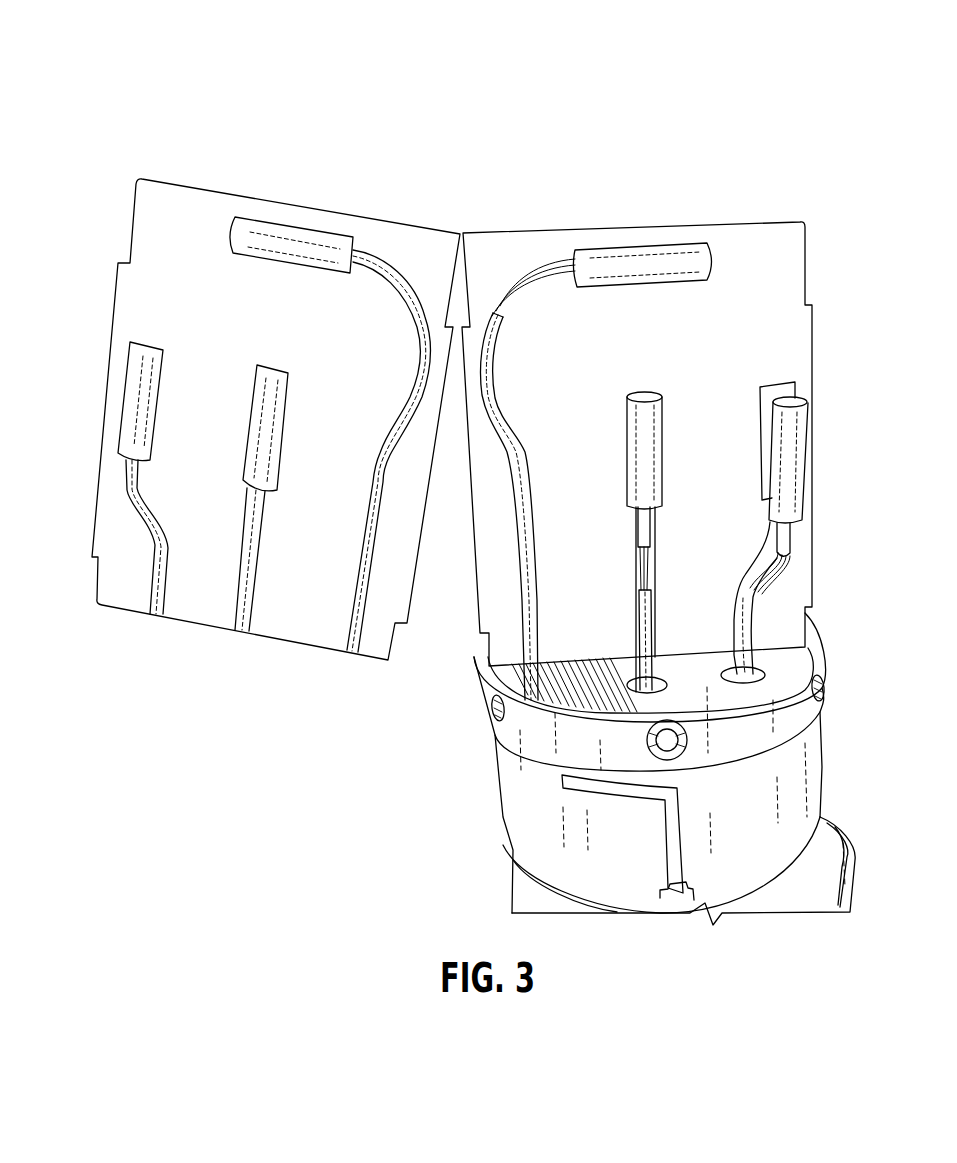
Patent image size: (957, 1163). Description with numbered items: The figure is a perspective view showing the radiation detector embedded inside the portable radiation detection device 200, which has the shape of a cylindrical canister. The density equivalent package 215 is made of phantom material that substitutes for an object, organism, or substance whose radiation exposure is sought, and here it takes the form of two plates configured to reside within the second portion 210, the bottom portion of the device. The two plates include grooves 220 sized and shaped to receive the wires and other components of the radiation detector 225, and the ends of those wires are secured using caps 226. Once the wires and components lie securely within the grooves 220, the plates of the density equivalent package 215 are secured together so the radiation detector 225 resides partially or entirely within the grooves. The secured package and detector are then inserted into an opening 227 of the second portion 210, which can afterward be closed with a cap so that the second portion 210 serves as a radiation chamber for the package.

The portable radiation detection device 200 is at (449, 113).
The second portion 210 is at (518, 802).
The density equivalent package 215 is at (165, 207).
The grooves 220 is at (318, 241).
The radiation detector 225 is at (545, 268).
The caps 226 is at (652, 253).
The opening 227 is at (702, 697).